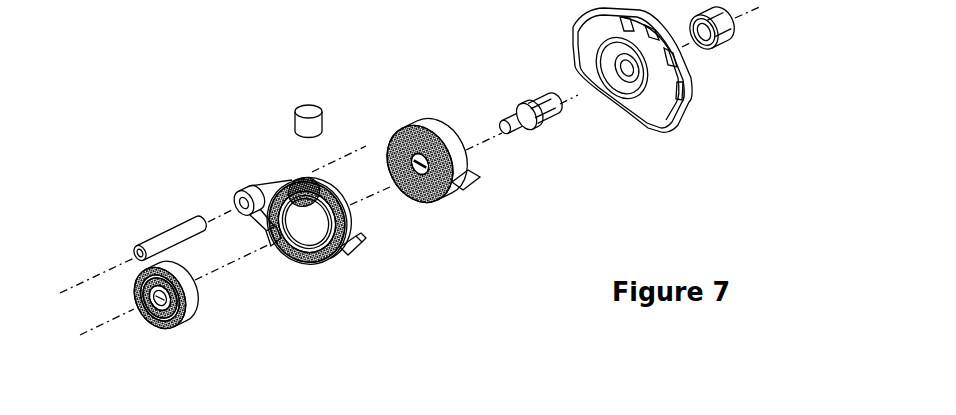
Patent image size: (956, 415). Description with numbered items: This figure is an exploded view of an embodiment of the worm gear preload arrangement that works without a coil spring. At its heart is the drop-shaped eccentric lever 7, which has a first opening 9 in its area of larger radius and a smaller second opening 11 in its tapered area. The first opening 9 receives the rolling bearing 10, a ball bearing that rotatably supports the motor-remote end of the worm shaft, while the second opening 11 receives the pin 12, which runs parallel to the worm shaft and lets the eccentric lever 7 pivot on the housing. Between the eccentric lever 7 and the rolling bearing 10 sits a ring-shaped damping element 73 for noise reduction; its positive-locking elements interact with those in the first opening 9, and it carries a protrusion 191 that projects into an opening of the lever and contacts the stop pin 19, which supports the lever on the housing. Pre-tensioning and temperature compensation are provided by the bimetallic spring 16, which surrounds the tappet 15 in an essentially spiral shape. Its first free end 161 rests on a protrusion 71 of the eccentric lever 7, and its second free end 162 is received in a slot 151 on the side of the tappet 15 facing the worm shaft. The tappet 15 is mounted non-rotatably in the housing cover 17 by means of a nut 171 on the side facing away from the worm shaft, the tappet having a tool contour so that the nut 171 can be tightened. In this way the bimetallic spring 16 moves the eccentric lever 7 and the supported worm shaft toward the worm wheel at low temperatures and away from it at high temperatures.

The eccentric lever 7 is at (289, 236).
The first opening 9 is at (308, 262).
The rolling bearing 10 is at (192, 313).
The second opening 11 is at (237, 194).
The pin 12 is at (188, 230).
The tappet 15 is at (533, 156).
The slot 151 is at (513, 133).
The bimetallic spring 16 is at (446, 210).
The first free end 161 is at (470, 190).
The second free end 162 is at (420, 200).
The housing cover 17 is at (653, 100).
The nut 171 is at (730, 30).
The stop pin 19 is at (308, 108).
The protrusion 191 is at (302, 188).
The protrusion 71 is at (355, 250).
The ring-shaped damping element 73 is at (290, 260).